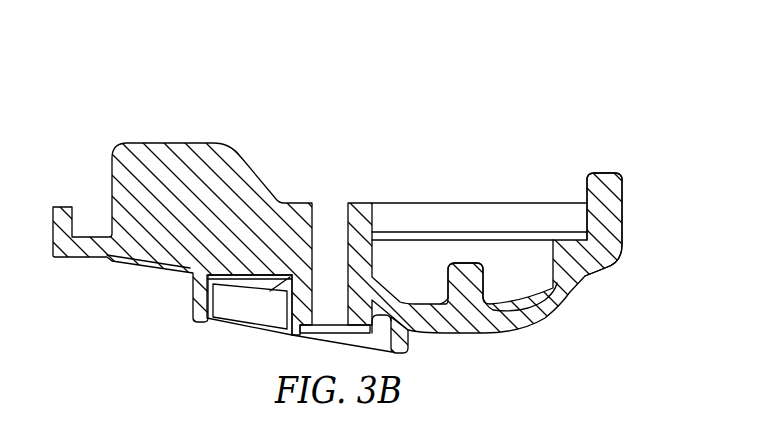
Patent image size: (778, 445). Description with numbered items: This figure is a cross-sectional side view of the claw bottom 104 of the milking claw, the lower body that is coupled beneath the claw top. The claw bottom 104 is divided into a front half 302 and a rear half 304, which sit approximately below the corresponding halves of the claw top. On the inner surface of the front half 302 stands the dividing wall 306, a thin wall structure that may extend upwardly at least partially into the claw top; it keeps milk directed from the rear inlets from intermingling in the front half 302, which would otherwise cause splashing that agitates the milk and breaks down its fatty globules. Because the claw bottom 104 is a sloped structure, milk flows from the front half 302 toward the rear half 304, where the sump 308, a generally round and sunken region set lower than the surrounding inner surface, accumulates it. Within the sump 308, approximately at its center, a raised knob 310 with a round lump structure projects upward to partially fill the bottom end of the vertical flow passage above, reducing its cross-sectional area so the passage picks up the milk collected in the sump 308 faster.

The claw bottom 104 is at (410, 138).
The front half 302 is at (142, 268).
The rear half 304 is at (583, 278).
The dividing wall 306 is at (126, 143).
The sump 308 is at (530, 326).
The raised knob 310 is at (455, 263).